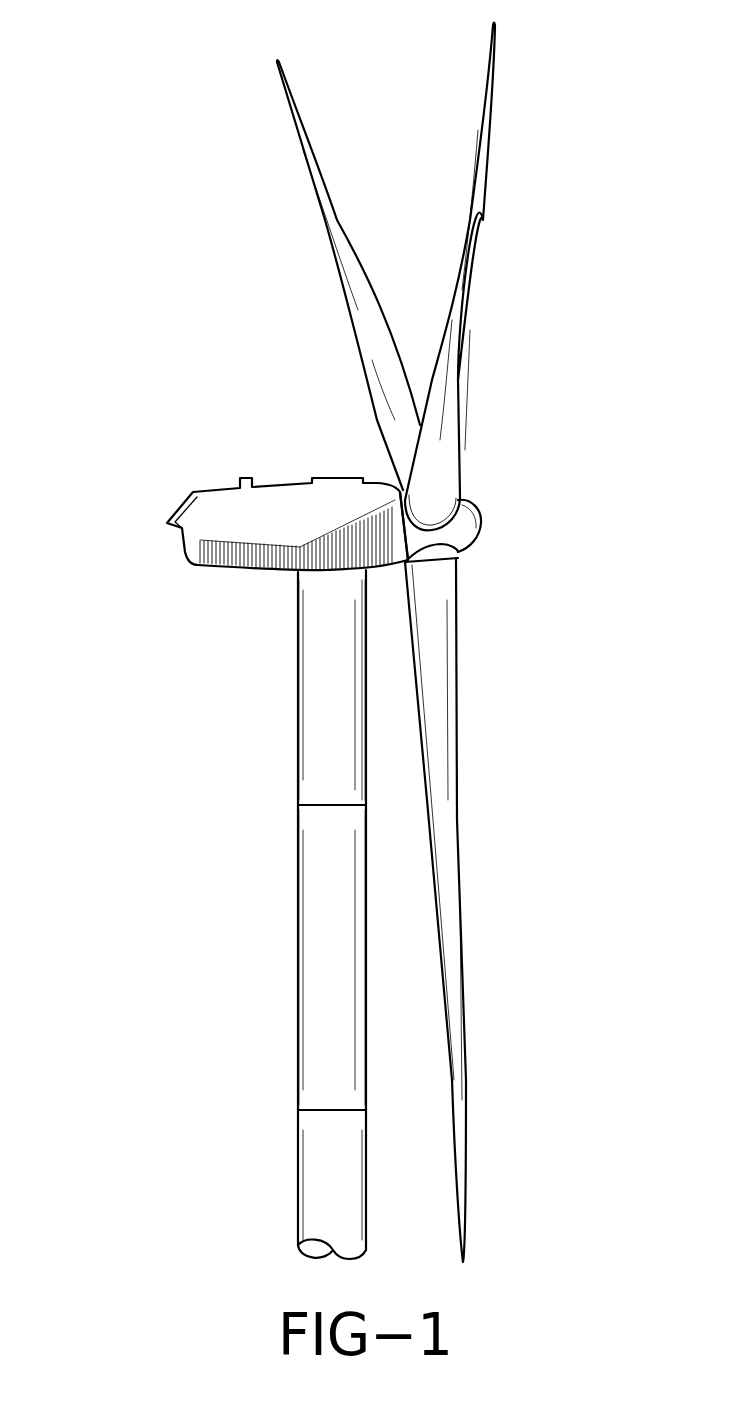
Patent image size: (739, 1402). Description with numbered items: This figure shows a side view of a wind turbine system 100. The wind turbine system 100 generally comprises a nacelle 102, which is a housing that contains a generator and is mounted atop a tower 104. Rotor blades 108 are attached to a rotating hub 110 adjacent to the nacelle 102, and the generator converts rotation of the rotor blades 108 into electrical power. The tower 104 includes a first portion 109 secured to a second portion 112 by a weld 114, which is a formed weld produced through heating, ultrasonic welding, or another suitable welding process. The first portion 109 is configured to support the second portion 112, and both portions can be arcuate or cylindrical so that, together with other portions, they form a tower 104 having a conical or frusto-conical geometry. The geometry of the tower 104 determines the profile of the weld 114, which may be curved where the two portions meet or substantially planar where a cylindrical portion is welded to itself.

The wind turbine system 100 is at (78, 243).
The nacelle 102 is at (258, 527).
The tower 104 is at (298, 893).
The rotor blades 108 is at (314, 186).
The first portion 109 is at (298, 977).
The rotating hub 110 is at (465, 523).
The second portion 112 is at (297, 703).
The weld 114 is at (298, 803).